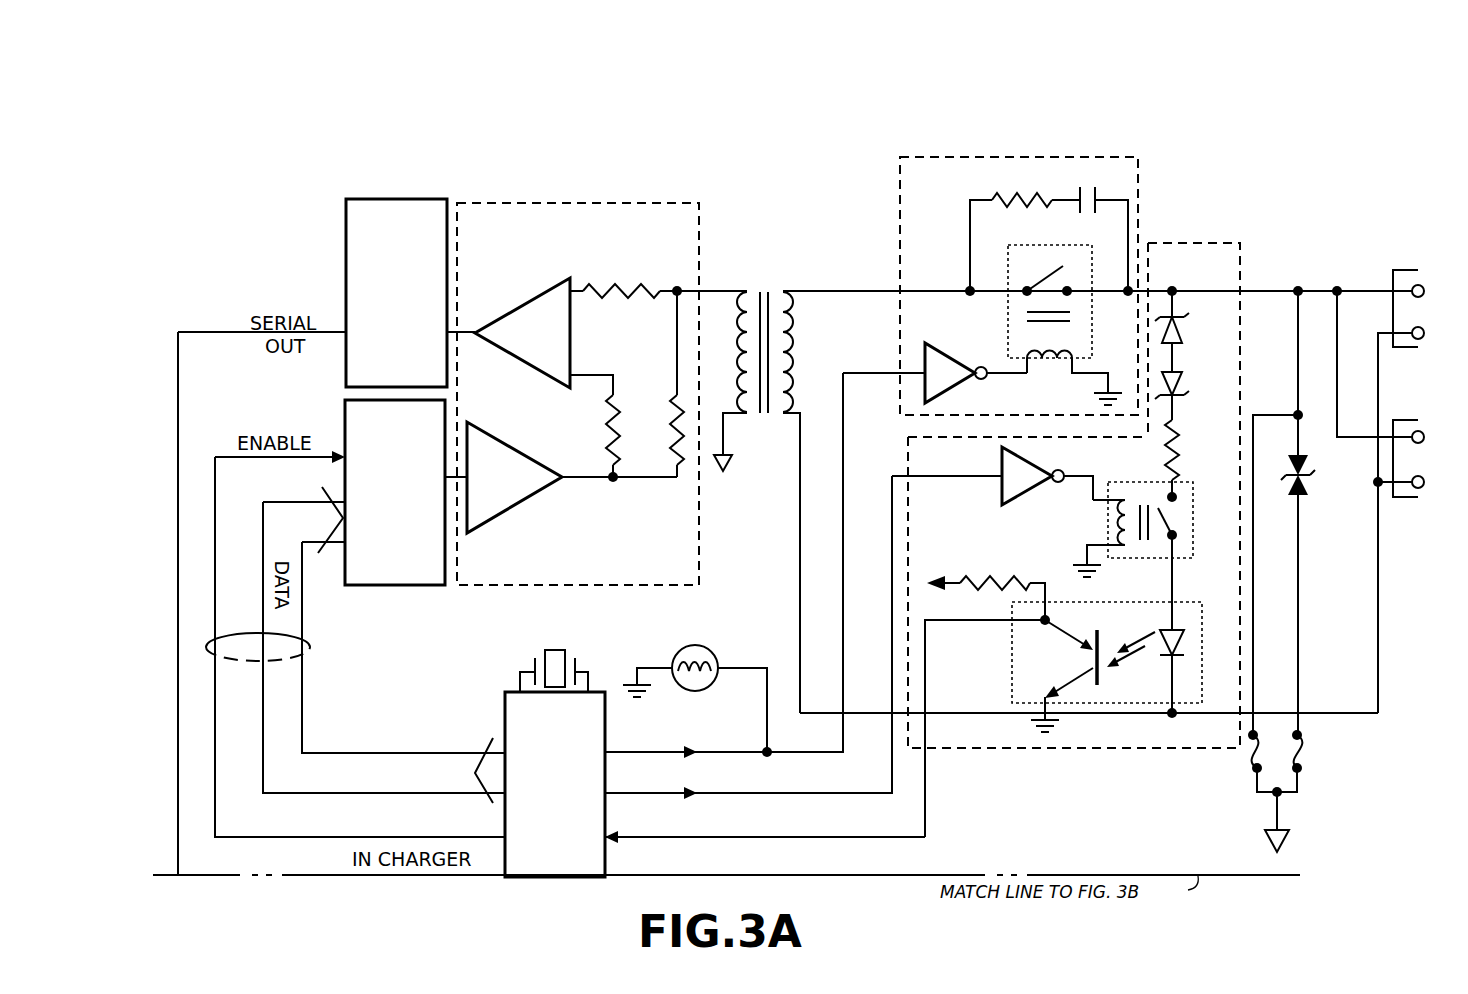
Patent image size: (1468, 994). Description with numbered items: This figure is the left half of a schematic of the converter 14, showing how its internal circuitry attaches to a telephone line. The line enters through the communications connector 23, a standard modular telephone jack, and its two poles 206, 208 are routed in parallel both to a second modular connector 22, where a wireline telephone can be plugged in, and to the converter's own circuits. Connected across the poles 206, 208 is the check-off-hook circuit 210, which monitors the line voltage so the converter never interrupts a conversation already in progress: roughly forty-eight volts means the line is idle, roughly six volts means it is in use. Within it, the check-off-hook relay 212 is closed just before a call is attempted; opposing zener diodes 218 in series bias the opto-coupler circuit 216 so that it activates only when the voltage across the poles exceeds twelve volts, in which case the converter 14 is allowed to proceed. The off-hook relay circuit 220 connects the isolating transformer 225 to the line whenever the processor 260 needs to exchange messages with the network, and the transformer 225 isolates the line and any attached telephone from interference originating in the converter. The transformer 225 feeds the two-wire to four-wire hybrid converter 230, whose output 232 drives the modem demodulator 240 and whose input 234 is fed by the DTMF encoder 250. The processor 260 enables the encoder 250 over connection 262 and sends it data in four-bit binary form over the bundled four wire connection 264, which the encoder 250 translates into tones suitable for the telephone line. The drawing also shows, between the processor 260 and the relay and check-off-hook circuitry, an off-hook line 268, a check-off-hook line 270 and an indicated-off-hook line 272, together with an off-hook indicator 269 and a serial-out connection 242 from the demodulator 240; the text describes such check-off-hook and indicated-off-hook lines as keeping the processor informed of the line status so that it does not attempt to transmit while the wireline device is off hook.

The converter 14 is at (220, 180).
The modular connector 22 is at (1400, 272).
The communications connector 23 is at (1400, 422).
The pole 206 is at (1318, 282).
The pole 208 is at (1388, 644).
The check-off-hook circuit 210 is at (1218, 481).
The check-off-hook relay 212 is at (1160, 560).
The opto-coupler circuit 216 is at (1135, 705).
The opposing zener diodes 218 is at (1228, 365).
The off-hook relay circuit 220 is at (1118, 157).
The isolating transformer 225 is at (789, 310).
The hybrid converter 230 is at (596, 369).
The output 232 is at (472, 330).
The input 234 is at (462, 442).
The demodulator 240 is at (398, 199).
The serial out line 242 is at (178, 398).
The encoder 250 is at (345, 420).
The processor 260 is at (572, 731).
The connection 262 is at (215, 462).
The bundled four wire connection 264 is at (300, 642).
The off hook line 268 is at (706, 752).
The off hook lamp 269 is at (680, 646).
The check off hook line 270 is at (810, 793).
The indicated off hook line 272 is at (862, 837).